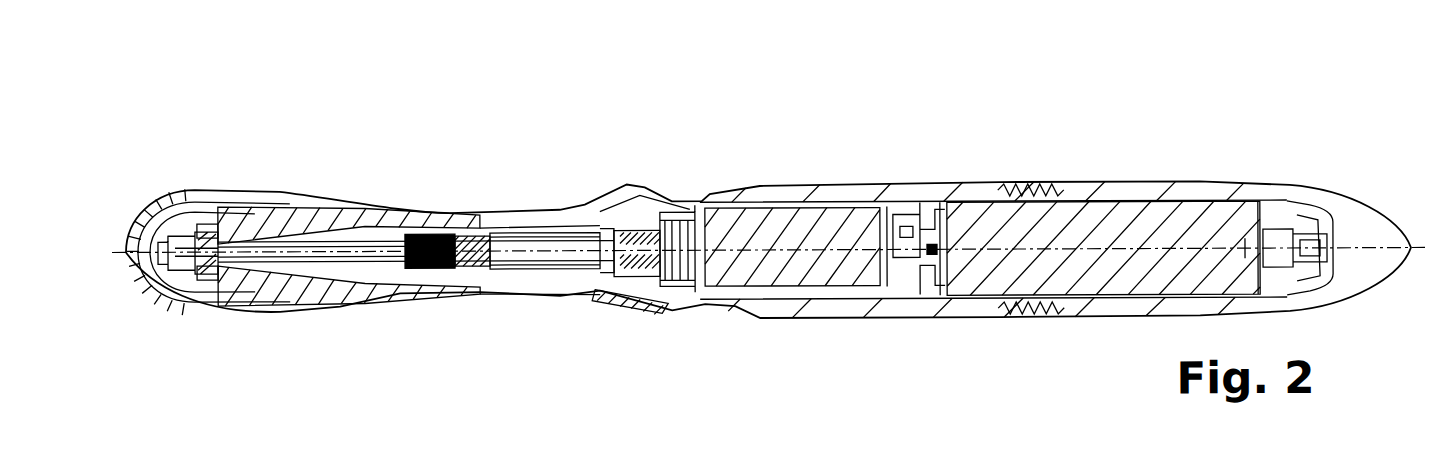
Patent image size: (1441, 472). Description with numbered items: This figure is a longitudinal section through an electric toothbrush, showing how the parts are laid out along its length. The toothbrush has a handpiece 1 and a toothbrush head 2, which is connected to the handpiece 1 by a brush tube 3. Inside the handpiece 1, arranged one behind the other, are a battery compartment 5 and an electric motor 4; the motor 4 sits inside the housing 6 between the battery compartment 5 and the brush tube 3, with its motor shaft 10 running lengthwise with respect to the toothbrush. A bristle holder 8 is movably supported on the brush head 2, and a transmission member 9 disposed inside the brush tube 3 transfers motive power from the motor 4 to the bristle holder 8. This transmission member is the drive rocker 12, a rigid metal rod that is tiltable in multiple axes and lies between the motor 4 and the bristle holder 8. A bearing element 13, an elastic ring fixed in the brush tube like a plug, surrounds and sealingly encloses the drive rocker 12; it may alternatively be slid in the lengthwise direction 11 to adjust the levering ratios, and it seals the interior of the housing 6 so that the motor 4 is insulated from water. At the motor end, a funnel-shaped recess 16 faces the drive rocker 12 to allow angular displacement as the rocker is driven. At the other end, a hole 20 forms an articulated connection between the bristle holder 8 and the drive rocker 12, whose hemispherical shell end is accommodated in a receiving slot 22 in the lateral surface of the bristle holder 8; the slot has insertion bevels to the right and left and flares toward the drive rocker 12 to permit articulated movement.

The handpiece 1 is at (785, 182).
The toothbrush head 2 is at (228, 316).
The brush tube 3 is at (490, 294).
The electric motor 4 is at (775, 268).
The battery compartment 5 is at (1200, 188).
The housing 6 is at (877, 190).
The bristle holder 8 is at (163, 283).
The transmission member 9 is at (534, 262).
The motor shaft 10 is at (673, 203).
The lengthwise direction 11 is at (1358, 250).
The drive rocker 12 is at (348, 240).
The bearing element 13 is at (440, 233).
The recess 16 is at (618, 234).
The hole 20 is at (213, 281).
The receiving slot 22 is at (212, 224).